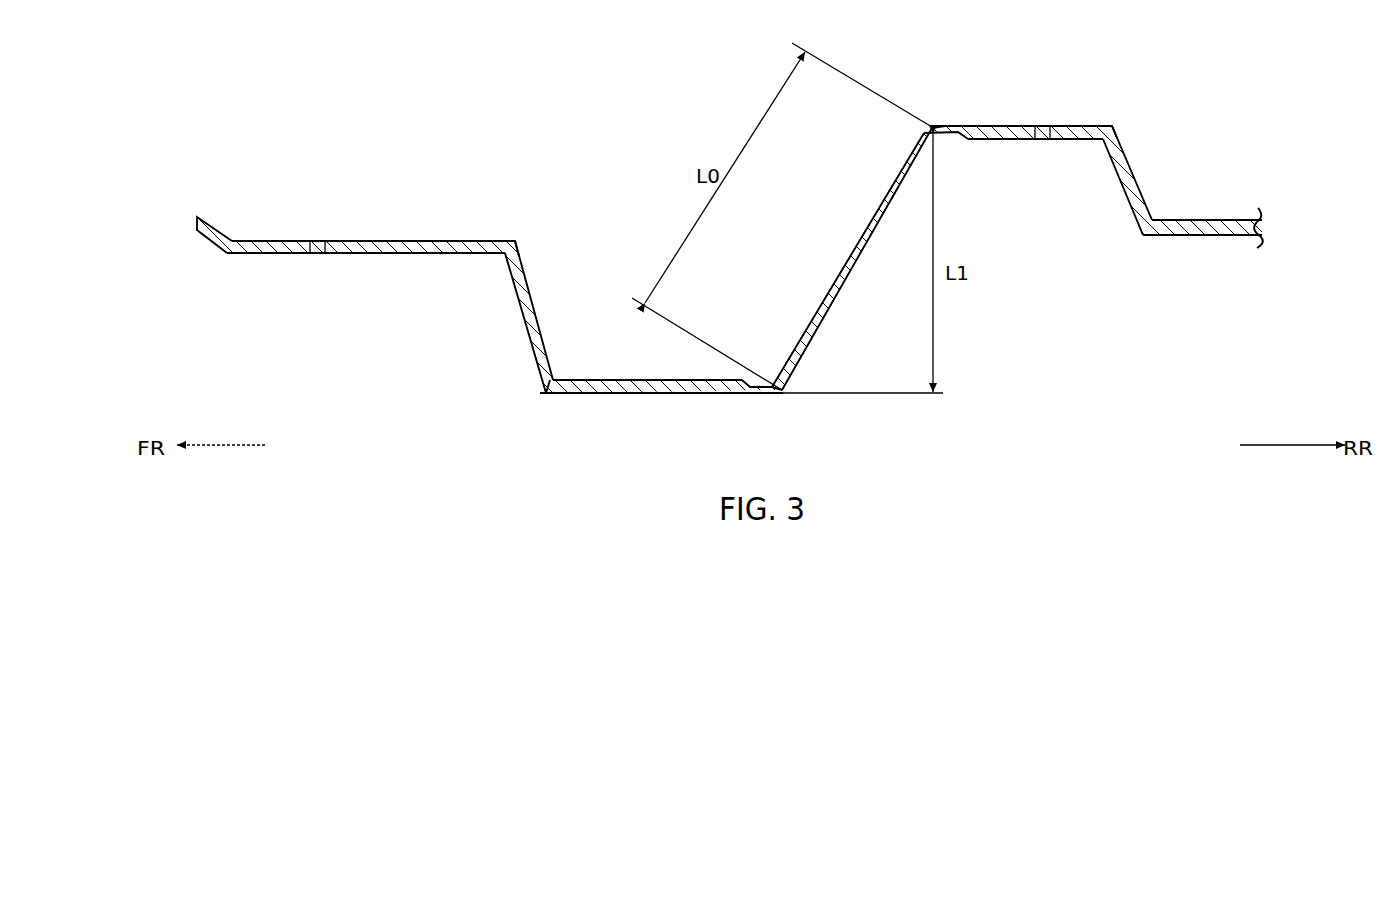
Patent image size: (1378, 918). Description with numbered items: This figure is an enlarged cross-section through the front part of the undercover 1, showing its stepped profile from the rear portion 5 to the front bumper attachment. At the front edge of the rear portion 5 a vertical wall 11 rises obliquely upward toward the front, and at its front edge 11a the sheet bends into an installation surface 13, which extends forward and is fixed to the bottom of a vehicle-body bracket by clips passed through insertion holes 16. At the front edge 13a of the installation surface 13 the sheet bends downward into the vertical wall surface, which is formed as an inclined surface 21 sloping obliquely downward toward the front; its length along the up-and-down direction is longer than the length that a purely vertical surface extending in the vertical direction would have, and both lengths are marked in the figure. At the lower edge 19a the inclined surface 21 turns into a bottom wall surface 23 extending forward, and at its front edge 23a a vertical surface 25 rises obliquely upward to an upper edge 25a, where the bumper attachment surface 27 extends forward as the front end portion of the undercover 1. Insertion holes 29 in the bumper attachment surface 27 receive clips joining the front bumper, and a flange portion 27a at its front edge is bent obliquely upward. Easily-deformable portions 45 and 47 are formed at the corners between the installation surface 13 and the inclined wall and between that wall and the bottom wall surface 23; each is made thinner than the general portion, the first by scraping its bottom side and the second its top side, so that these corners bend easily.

The undercover 1 is at (560, 192).
The rear portion 5 is at (1205, 219).
The vertical wall 11 is at (1136, 174).
The front edge of vertical wall 11a is at (1112, 126).
The installation surface 13 is at (995, 126).
The front edge of installation surface 13a is at (930, 125).
The insertion hole 16 is at (1045, 126).
The lower edge of vertical wall surface 19a is at (768, 380).
The inclined surface 21 is at (847, 262).
The bottom wall surface 23 is at (656, 396).
The front edge of bottom wall surface 23a is at (547, 396).
The vertical surface 25 is at (526, 318).
The upper edge of vertical surface 25a is at (511, 241).
The bumper attachment surface 27 is at (433, 241).
The flange portion 27a is at (215, 252).
The insertion hole 29 is at (318, 256).
The easily-deformable portion 45 is at (953, 135).
The easily-deformable portion 47 is at (777, 383).